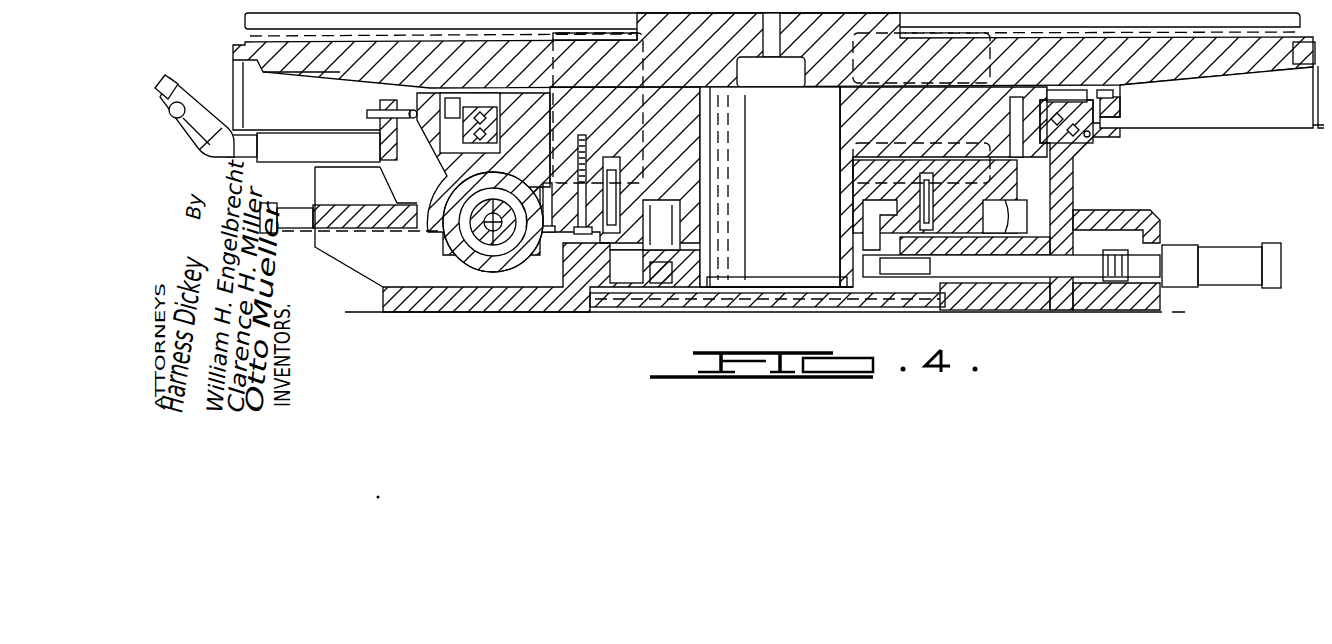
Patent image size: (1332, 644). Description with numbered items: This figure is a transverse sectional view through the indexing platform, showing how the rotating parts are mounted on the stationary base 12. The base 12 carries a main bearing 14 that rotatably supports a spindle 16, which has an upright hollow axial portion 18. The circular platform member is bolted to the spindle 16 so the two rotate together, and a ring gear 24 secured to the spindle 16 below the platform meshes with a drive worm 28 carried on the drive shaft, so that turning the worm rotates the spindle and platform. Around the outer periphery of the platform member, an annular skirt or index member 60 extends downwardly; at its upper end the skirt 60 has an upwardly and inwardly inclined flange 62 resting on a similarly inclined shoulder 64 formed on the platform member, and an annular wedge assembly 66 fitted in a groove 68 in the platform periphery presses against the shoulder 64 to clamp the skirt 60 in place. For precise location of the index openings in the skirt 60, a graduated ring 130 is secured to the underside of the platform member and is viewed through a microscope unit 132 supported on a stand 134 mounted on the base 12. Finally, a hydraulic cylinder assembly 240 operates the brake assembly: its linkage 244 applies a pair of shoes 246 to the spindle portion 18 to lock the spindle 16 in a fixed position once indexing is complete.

The stationary base 12 is at (1040, 308).
The main bearing 14 is at (1083, 144).
The spindle 16 is at (1009, 96).
The upright hollow axial portion 18 is at (840, 184).
The ring gear 24 is at (562, 244).
The drive worm 28 is at (467, 240).
The annular skirt 60 is at (1313, 106).
The inclined flange 62 is at (1307, 64).
The inclined shoulder 64 is at (240, 68).
The annular wedge assembly 66 is at (1302, 60).
The groove 68 is at (265, 38).
The graduated ring 130 is at (427, 128).
The microscope unit 132 is at (208, 165).
The stand 134 is at (363, 254).
The hydraulic cylinder assembly 240 is at (1213, 253).
The linkage 244 is at (877, 279).
The shoes 246 is at (663, 275).